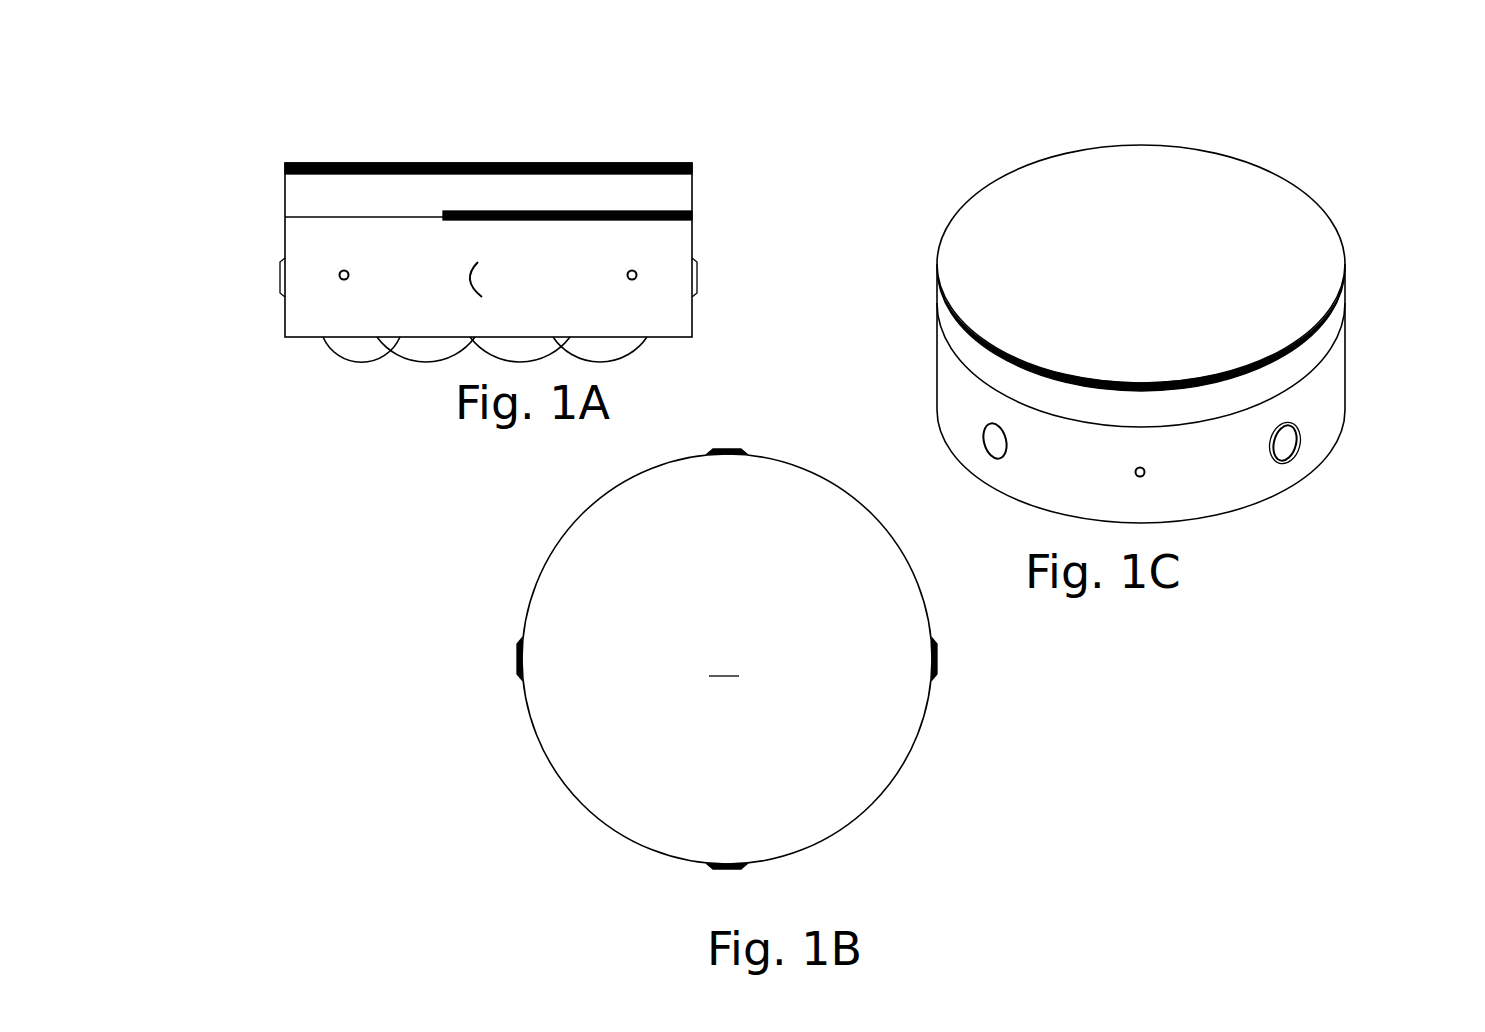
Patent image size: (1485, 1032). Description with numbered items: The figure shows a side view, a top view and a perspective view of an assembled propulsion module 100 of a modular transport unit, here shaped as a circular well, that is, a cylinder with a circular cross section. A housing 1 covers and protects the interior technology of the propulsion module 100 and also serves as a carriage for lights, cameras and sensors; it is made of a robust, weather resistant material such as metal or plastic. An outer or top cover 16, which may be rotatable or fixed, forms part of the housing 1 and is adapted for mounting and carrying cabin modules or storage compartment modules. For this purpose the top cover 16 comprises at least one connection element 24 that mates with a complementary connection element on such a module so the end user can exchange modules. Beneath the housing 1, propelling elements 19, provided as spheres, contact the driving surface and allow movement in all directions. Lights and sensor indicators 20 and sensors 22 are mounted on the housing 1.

In FIG. 1A, the propulsion module 100 is at (308, 368).
In FIG. 1B, the propulsion module 100 is at (504, 815).
In FIG. 1C, the propulsion module 100 is at (1283, 528).
In FIG. 1A, the housing 1 is at (680, 322).
In FIG. 1B, the housing 1 is at (632, 838).
In FIG. 1C, the housing 1 is at (1345, 380).
In FIG. 1A, the top cover 16 is at (652, 216).
In FIG. 1B, the top cover 16 is at (872, 813).
In FIG. 1C, the top cover 16 is at (1330, 357).
In FIG. 1A, the propelling elements 19 is at (373, 348).
In FIG. 1A, the lights and sensor indicators 20 is at (476, 283).
In FIG. 1B, the lights and sensor indicators 20 is at (940, 662).
In FIG. 1C, the lights and sensor indicators 20 is at (1292, 447).
In FIG. 1A, the sensors 22 is at (634, 273).
In FIG. 1C, the sensors 22 is at (1145, 476).
In FIG. 1A, the connection element 24 is at (456, 163).
In FIG. 1B, the connection element 24 is at (724, 664).
In FIG. 1C, the connection element 24 is at (1172, 248).